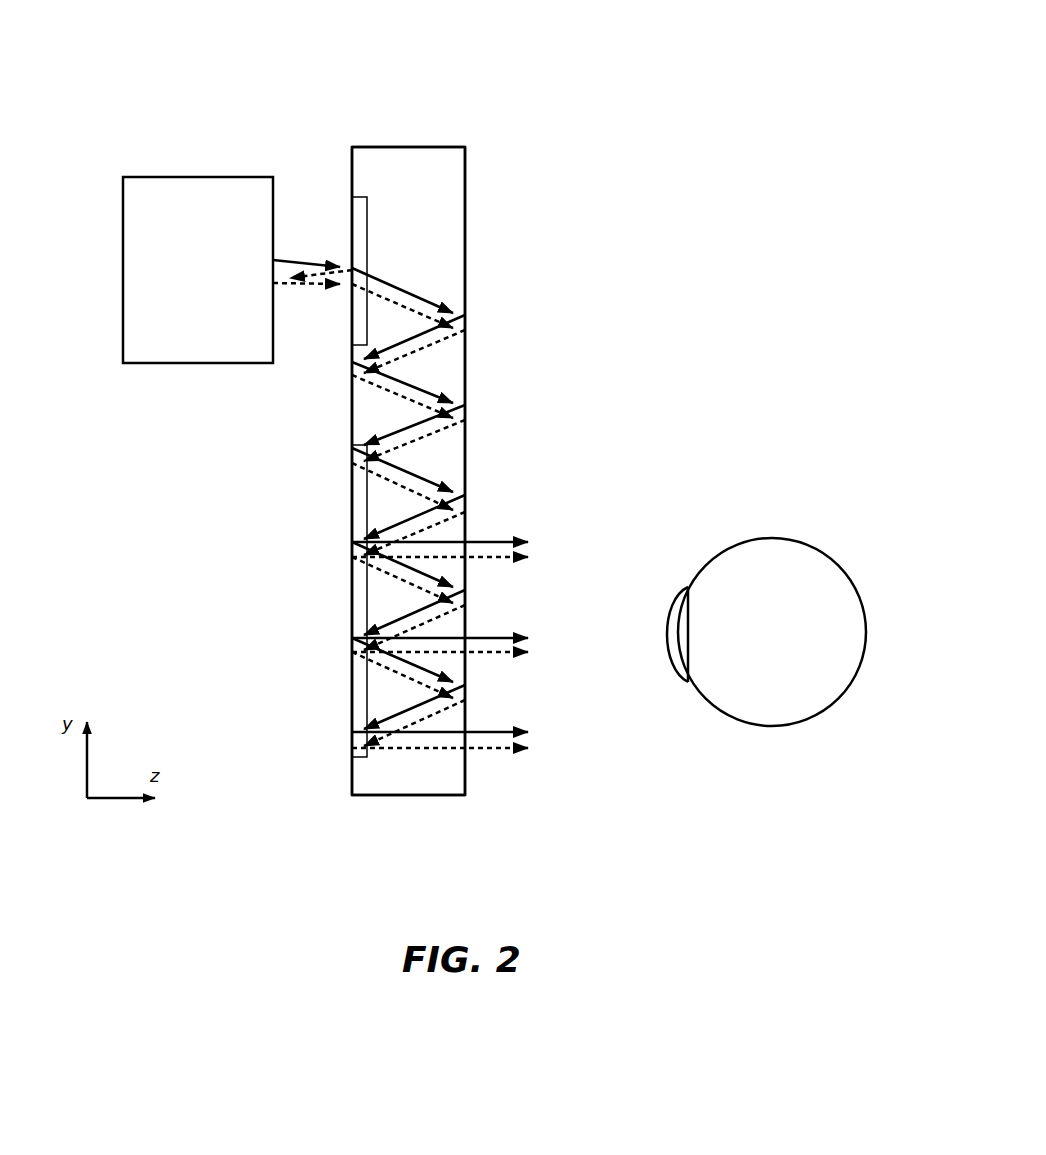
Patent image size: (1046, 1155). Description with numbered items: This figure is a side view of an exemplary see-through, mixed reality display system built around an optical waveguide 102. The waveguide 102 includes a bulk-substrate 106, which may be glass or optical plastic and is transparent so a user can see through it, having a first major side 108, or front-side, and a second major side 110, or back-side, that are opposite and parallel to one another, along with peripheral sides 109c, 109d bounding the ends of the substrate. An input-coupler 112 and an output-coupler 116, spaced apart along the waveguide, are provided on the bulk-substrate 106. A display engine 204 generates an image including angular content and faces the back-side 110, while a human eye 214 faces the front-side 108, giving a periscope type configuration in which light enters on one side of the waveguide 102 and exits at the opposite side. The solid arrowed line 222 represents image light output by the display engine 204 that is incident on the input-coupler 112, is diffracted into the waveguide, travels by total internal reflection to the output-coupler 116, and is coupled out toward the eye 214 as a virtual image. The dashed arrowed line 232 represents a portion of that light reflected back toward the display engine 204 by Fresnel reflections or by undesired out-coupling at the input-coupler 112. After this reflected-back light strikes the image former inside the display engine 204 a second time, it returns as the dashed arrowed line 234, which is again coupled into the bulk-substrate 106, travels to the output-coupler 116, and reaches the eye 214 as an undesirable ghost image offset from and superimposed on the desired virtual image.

The optical waveguide 102 is at (382, 110).
The bulk-substrate 106 is at (408, 471).
The first major side 108 is at (467, 180).
The peripheral side 109c is at (412, 146).
The peripheral side 109d is at (445, 797).
The second major side 110 is at (350, 158).
The input-coupler 112 is at (350, 202).
The output-coupler 116 is at (352, 703).
The display engine 204 is at (232, 176).
The human eye 214 is at (795, 572).
The solid arrowed line 222 is at (300, 260).
The dashed arrowed line 232 is at (305, 272).
The dashed arrowed line 234 is at (317, 286).